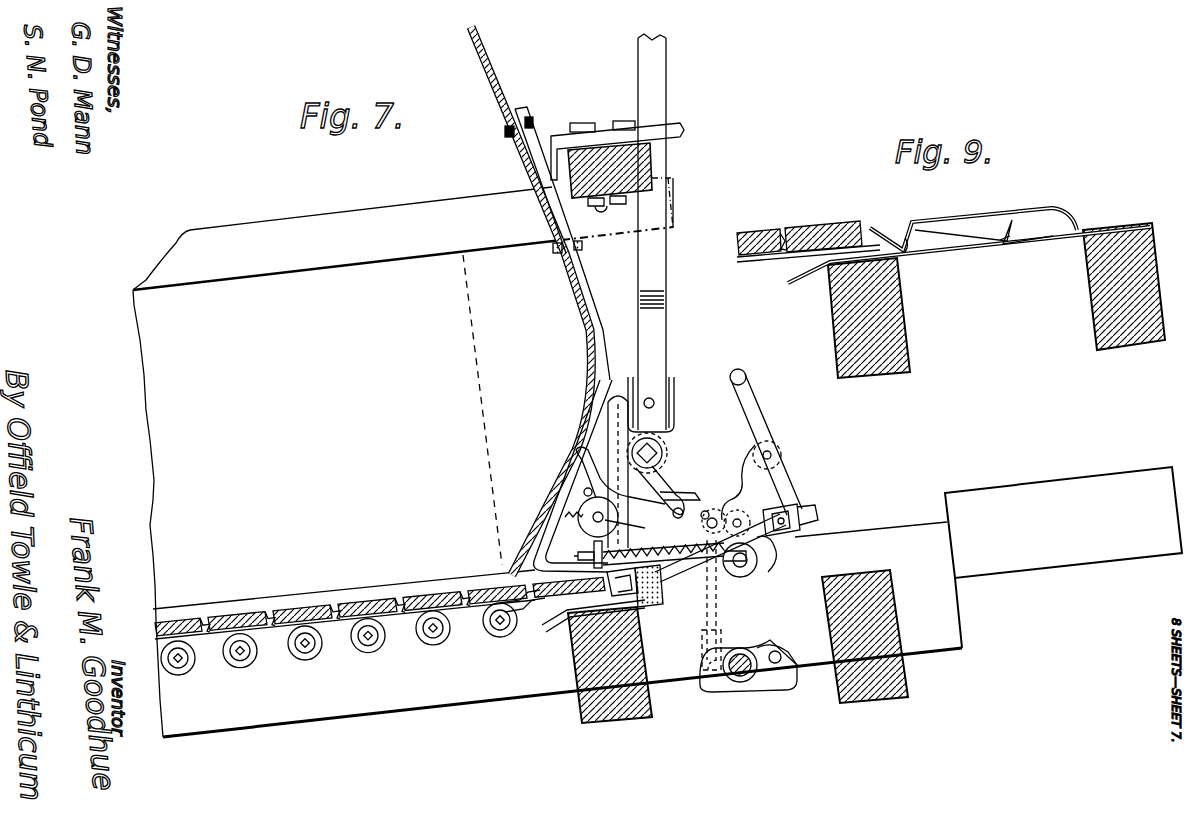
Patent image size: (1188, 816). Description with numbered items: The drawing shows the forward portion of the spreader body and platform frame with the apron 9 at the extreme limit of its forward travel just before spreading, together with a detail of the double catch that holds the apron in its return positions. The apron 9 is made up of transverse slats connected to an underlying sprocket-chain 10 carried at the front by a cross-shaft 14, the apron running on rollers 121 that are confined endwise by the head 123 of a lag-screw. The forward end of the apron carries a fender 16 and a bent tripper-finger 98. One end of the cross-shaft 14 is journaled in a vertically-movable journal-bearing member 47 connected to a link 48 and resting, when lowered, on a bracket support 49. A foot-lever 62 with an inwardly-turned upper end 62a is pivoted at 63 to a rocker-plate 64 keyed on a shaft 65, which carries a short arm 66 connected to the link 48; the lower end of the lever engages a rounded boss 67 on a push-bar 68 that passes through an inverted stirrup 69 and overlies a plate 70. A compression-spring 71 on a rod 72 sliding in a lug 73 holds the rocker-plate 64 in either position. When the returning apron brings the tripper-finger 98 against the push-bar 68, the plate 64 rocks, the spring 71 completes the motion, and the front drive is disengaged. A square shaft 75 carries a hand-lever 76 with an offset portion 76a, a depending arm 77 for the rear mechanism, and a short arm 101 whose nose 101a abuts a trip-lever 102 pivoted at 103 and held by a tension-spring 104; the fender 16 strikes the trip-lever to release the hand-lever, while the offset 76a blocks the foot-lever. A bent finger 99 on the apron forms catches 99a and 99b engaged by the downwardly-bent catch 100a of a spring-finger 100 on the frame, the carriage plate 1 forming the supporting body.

In FIG. 7, the carriage plate 1 is at (360, 220).
In FIG. 7, the apron 9 is at (300, 606).
In FIG. 9, the apron 9 is at (810, 230).
In FIG. 7, the sprocket-chain 10 is at (370, 636).
In FIG. 7, the roller 121 is at (497, 638).
In FIG. 7, the head of the lag-screw 123 is at (302, 645).
In FIG. 7, the front cross-shaft 14 is at (740, 652).
In FIG. 7, the fender 16 is at (568, 262).
In FIG. 7, the journal-bearing member 47 is at (748, 655).
In FIG. 7, the link 48 is at (718, 600).
In FIG. 7, the bracket support 49 is at (760, 690).
In FIG. 7, the foot-lever 62 is at (758, 413).
In FIG. 7, the inwardly-turned upper end 62a is at (746, 372).
In FIG. 7, the pivot 63 is at (775, 450).
In FIG. 7, the rocker-plate 64 is at (720, 534).
In FIG. 7, the shaft 65 is at (735, 511).
In FIG. 7, the short arm 66 is at (711, 517).
In FIG. 7, the rounded boss 67 is at (802, 504).
In FIG. 7, the push-bar 68 is at (760, 545).
In FIG. 7, the inverted stirrup 69 is at (672, 582).
In FIG. 7, the plate 70 is at (522, 605).
In FIG. 7, the compression-spring 71 is at (680, 550).
In FIG. 7, the rod 72 is at (578, 556).
In FIG. 7, the lug 73 is at (593, 550).
In FIG. 7, the square shaft 75 is at (656, 447).
In FIG. 7, the hand-lever 76 is at (660, 99).
In FIG. 7, the inwardly-offset portion 76a is at (668, 308).
In FIG. 7, the depending arm 77 is at (703, 511).
In FIG. 7, the tripper-finger 98 is at (568, 632).
In FIG. 7, the depending arm 101 is at (668, 475).
In FIG. 7, the nose 101a is at (685, 492).
In FIG. 7, the trip-lever 102 is at (602, 517).
In FIG. 7, the pivot 103 is at (612, 520).
In FIG. 7, the tension-spring 104 is at (585, 505).
In FIG. 9, the finger 99 is at (965, 232).
In FIG. 9, the catch 99a is at (1010, 240).
In FIG. 9, the catch 99b is at (910, 248).
In FIG. 9, the spring-finger 100 is at (1048, 212).
In FIG. 9, the downwardly-bent catch 100a is at (903, 228).